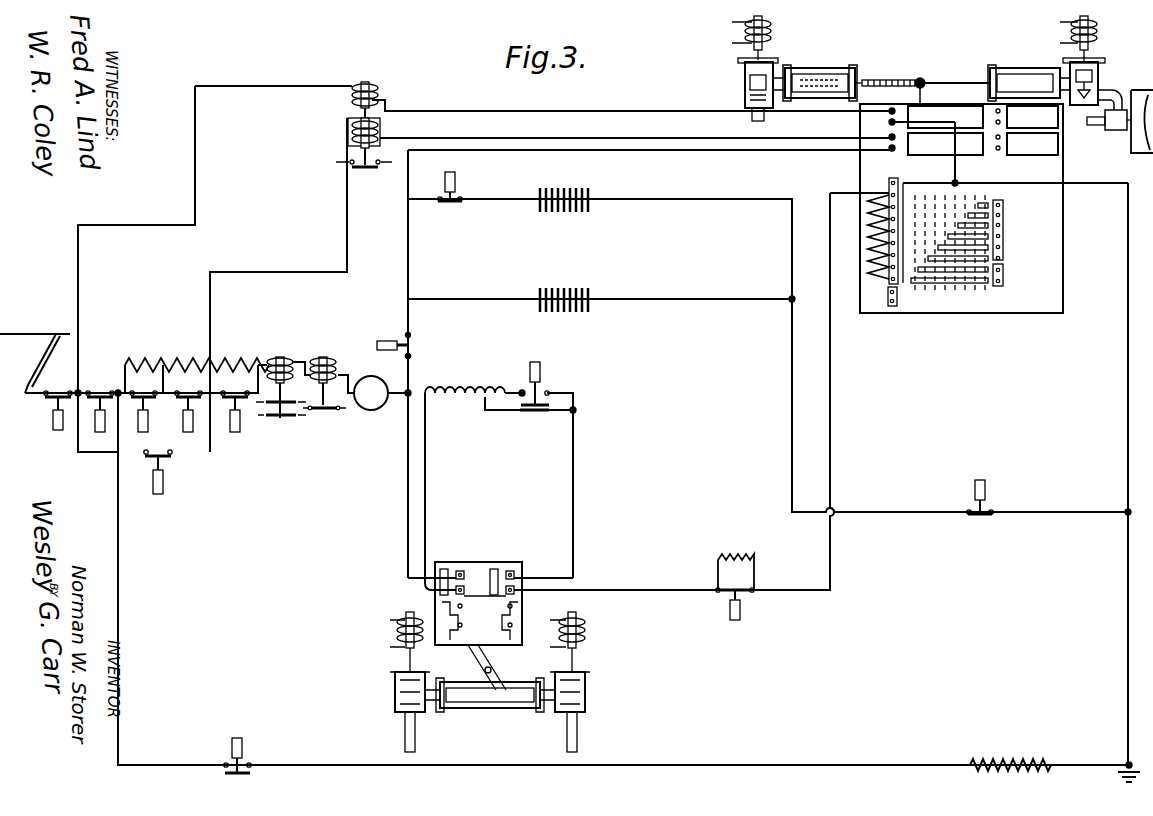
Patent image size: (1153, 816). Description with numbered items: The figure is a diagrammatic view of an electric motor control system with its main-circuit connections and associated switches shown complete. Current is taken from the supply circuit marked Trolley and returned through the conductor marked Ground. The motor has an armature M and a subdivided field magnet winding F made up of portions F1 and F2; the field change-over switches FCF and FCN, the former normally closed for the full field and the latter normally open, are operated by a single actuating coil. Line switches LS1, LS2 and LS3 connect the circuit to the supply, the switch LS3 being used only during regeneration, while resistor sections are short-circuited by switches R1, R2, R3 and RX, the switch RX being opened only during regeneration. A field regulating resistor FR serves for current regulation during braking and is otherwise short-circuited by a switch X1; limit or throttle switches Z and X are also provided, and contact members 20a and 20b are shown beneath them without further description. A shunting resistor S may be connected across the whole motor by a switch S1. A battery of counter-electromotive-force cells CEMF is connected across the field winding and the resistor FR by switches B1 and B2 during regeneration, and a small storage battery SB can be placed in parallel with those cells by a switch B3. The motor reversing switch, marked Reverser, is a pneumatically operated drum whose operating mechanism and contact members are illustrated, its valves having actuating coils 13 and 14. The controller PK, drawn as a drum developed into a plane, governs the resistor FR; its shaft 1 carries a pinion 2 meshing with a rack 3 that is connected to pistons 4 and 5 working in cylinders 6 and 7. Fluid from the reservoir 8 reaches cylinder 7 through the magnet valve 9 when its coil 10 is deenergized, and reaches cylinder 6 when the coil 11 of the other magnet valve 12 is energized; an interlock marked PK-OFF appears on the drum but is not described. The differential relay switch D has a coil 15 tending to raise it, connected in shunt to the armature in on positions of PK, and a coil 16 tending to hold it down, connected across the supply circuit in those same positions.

The shaft 1 is at (922, 97).
The pinion 2 is at (924, 78).
The rack 3 is at (906, 78).
The piston 4 is at (805, 68).
The piston 5 is at (1017, 68).
The cylinder 6 is at (843, 68).
The cylinder 7 is at (1053, 68).
The tank or reservoir 8 is at (1144, 98).
The electromagnetically controlled valve 9 is at (1085, 108).
The actuating coil 10 is at (1098, 31).
The actuating coil 11 is at (772, 31).
The magnet valve 12 is at (745, 93).
The actuating coil 13 is at (397, 637).
The actuating coil 14 is at (582, 637).
The coil 15 is at (352, 136).
The coil 16 is at (352, 98).
The contacts 20a is at (262, 415).
The contact 20b is at (270, 418).
The differential relay switch D is at (355, 114).
The switch B1 is at (408, 346).
The switch B2 is at (967, 497).
The switch B3 is at (450, 204).
The storage battery SB is at (564, 212).
The counter-electromotive force cells CEMF is at (580, 312).
The controller PK is at (961, 222).
The PK off contacts PK-OFF is at (1003, 228).
The switch X1 is at (888, 182).
The field regulating resistor FR is at (866, 258).
The line switch LS1 is at (48, 422).
The line switch LS2 is at (88, 430).
The line switch LS3 is at (147, 472).
The switch R1 is at (151, 415).
The switch R2 is at (194, 415).
The switch R3 is at (244, 415).
The limit or throttle switch Z is at (275, 371).
The limit or throttle switch X is at (323, 373).
The armature M is at (371, 393).
The field magnet winding F is at (465, 407).
The field winding portion F1 is at (467, 390).
The field winding portion F2 is at (504, 383).
The field change-over switch FCN is at (541, 388).
The field change-over switch FCF is at (535, 418).
The motor reversing switch Reverser is at (478, 616).
The switch RX is at (712, 587).
The switch S1 is at (250, 755).
The shunting resistor S is at (1010, 755).
The return circuit conductor Ground is at (1122, 775).
The supply circuit Trolley is at (28, 324).